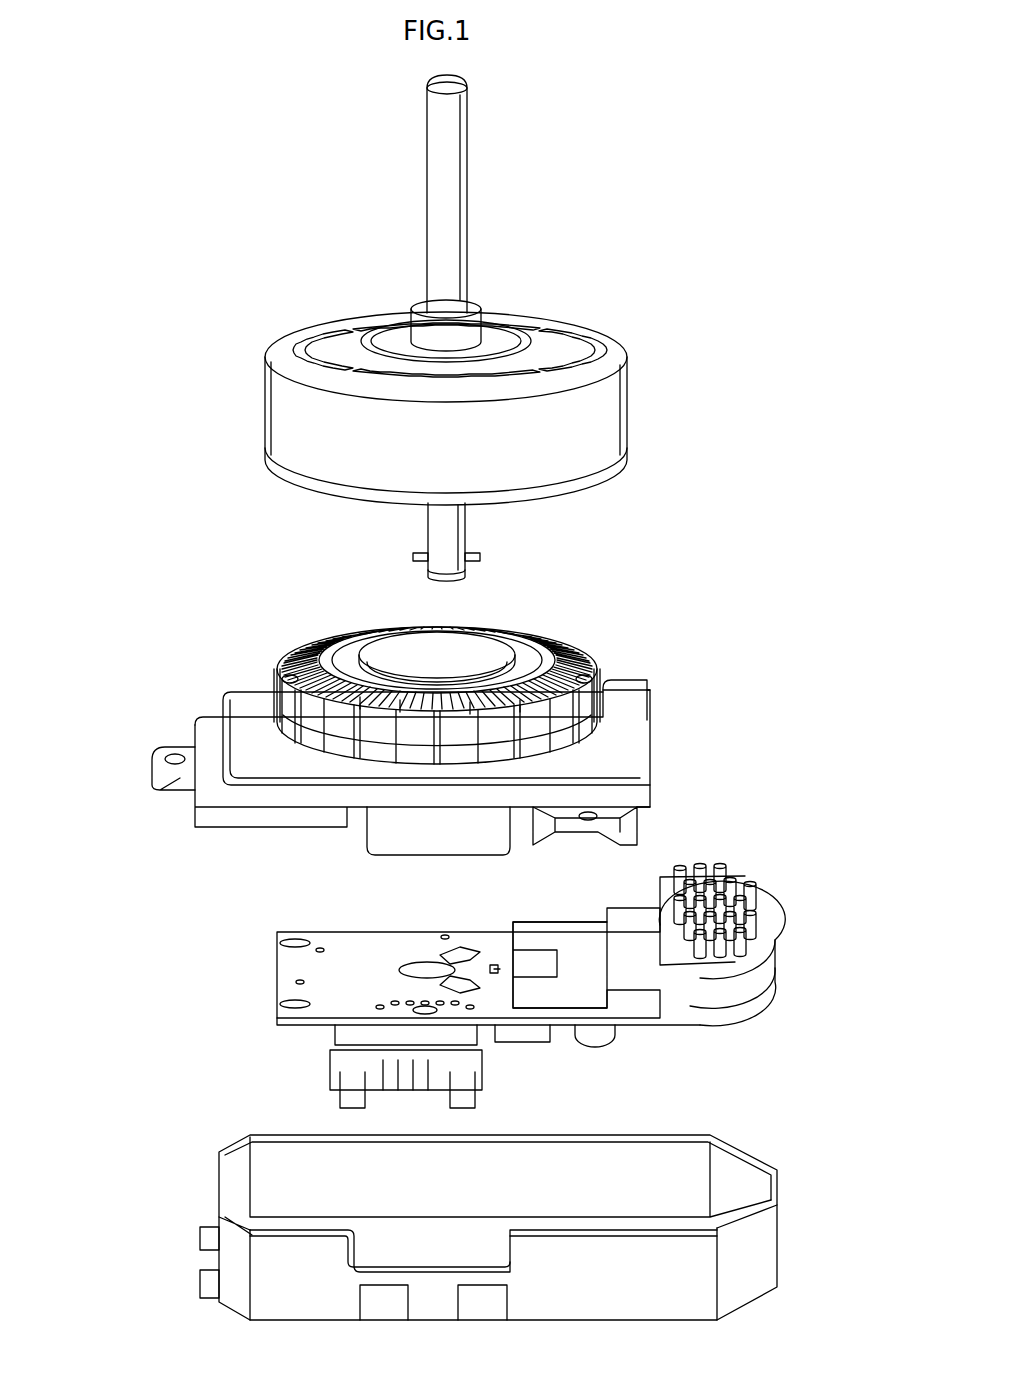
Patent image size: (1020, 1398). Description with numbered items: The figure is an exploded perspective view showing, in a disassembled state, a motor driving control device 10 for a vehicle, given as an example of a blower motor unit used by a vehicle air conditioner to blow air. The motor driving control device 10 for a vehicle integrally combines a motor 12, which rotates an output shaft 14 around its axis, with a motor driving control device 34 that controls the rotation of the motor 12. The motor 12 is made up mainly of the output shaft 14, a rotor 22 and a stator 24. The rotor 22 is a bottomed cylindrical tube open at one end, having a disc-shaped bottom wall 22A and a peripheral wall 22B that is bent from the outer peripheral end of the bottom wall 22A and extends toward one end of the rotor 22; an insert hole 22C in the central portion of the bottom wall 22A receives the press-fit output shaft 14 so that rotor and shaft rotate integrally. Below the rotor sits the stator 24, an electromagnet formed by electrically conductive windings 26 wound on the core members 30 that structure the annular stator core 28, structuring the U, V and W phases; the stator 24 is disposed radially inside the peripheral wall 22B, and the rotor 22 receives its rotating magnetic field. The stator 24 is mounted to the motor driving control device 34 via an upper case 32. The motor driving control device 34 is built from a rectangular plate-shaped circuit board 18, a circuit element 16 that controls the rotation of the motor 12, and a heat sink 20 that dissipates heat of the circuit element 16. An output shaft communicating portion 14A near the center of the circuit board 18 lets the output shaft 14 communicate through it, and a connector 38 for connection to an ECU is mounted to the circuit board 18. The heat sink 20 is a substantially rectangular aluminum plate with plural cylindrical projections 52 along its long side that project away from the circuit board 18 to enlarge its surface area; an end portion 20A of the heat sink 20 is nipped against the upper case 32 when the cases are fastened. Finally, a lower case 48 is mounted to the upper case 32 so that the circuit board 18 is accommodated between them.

The motor driving control device for a vehicle 10 is at (137, 410).
The motor 12 is at (735, 343).
The output shaft 14 is at (467, 245).
The output shaft communicating portion 14A is at (414, 962).
The circuit element 16 is at (522, 1042).
The circuit board 18 is at (277, 965).
The heat sink 20 is at (775, 925).
The end portion of the heat sink 20A is at (622, 897).
The rotor 22 is at (628, 425).
The bottom wall 22A is at (342, 350).
The peripheral wall 22B is at (265, 395).
The insert hole 22C is at (445, 300).
The stator 24 is at (614, 664).
The windings 26 is at (525, 640).
The stator core 28 is at (292, 650).
The core members 30 is at (385, 757).
The upper case 32 is at (652, 730).
The motor driving control device 34 is at (816, 843).
The connector 38 is at (330, 1060).
The lower case 48 is at (784, 1230).
The projections 52 is at (718, 862).